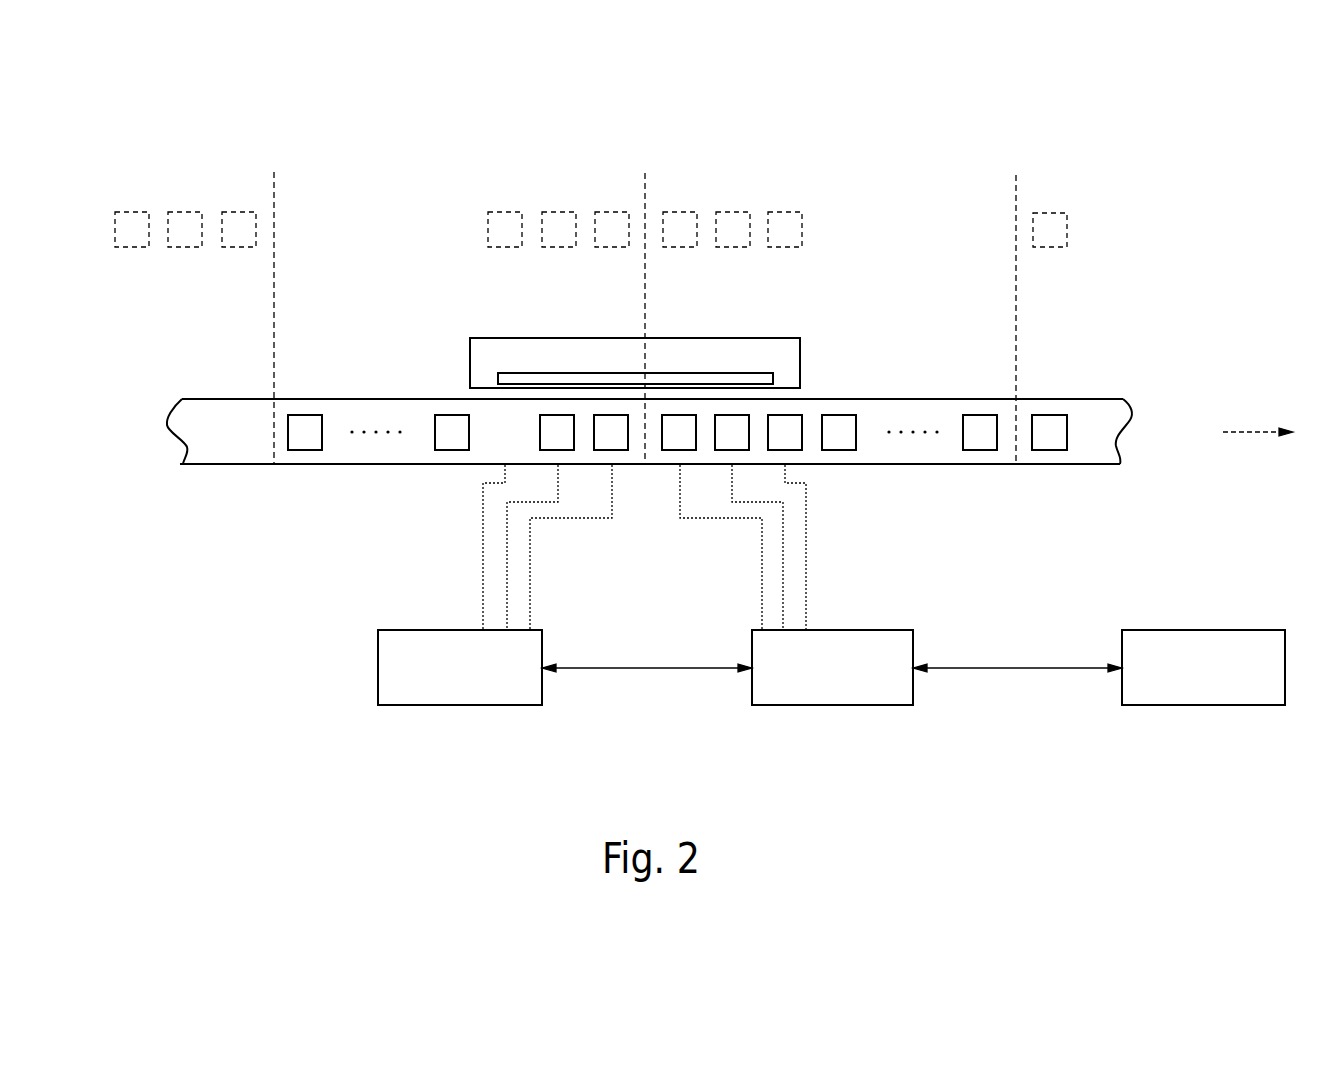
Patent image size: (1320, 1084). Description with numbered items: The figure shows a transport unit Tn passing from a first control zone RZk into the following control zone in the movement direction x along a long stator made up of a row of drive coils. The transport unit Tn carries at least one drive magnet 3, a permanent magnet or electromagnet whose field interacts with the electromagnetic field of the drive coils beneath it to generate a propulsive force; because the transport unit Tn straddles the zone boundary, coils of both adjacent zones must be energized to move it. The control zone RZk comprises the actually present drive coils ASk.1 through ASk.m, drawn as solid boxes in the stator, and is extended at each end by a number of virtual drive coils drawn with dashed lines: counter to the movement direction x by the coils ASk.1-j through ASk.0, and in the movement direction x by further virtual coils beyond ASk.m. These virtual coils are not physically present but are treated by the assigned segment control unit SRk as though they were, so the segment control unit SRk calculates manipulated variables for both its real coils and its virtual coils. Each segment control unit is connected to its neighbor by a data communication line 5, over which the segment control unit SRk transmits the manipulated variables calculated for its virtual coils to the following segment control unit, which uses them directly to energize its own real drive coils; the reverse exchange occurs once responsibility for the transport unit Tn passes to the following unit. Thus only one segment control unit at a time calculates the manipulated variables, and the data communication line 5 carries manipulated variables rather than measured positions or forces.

The drive magnet 3 is at (775, 380).
The data communication line 5 is at (637, 670).
The transport unit Tn is at (752, 338).
The first control zone RZk is at (300, 397).
The first segment control unit SRk is at (460, 667).
The virtual drive coil ASk.1-j is at (133, 210).
The virtual drive coil ASk.0 is at (238, 210).
The drive coil ASk.1 is at (307, 452).
The drive coil ASk.m is at (605, 452).
The movement direction x is at (1268, 431).